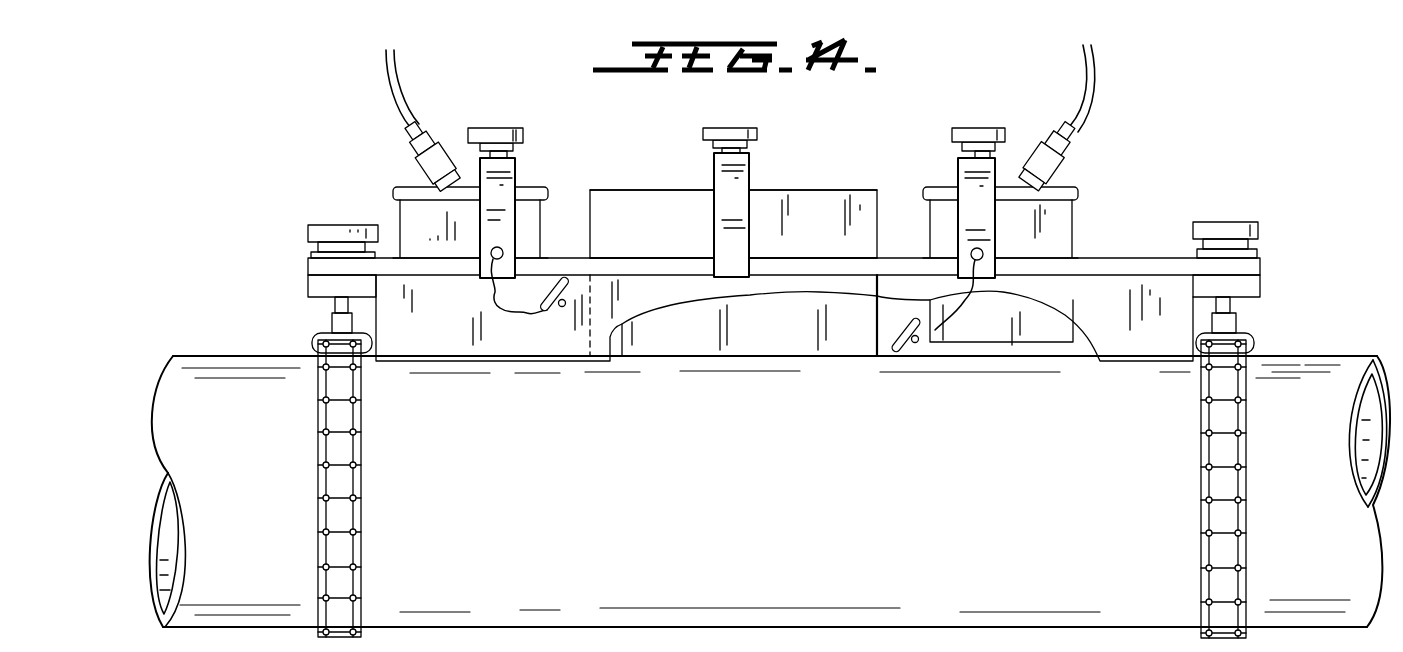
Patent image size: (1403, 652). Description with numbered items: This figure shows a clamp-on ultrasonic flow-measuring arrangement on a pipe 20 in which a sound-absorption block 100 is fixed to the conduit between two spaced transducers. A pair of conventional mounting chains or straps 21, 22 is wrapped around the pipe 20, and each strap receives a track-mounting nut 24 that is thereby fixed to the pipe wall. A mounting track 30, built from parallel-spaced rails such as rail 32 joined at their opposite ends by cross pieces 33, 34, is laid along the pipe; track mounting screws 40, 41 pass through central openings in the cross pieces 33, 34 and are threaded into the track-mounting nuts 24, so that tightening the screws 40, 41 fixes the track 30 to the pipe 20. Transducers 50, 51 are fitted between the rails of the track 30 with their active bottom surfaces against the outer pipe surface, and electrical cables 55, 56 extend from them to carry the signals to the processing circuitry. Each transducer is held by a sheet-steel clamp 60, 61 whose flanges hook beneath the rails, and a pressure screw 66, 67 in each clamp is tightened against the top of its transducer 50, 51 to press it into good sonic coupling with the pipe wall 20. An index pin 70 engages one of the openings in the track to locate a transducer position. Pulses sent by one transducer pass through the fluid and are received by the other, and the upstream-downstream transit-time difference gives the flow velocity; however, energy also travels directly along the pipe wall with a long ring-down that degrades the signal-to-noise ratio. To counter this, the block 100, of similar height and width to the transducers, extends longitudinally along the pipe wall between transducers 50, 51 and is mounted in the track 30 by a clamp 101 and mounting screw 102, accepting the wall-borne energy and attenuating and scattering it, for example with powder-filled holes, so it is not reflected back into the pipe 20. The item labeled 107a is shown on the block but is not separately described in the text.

The pipe 20 is at (772, 508).
The mounting chain or strap 21 is at (361, 513).
The mounting chain or strap 22 is at (1201, 512).
The track-mounting nut 24 is at (332, 322).
The mounting track 30 is at (890, 250).
The rail 32 is at (510, 347).
The cross piece 33 is at (308, 256).
The cross piece 34 is at (1264, 258).
The track mounting screw 40 is at (345, 224).
The track mounting screw 41 is at (1250, 203).
The transducer 50 is at (398, 208).
The transducer 51 is at (1080, 222).
The electrical cable 55 is at (387, 90).
The electrical cable 56 is at (1090, 104).
The clamp 60 is at (513, 173).
The clamp 61 is at (958, 175).
The pressure screw 66 is at (512, 112).
The pressure screw 67 is at (1003, 108).
The index pin 70 is at (503, 298).
The sound-absorption block 100 is at (805, 202).
The clamp 101 is at (715, 229).
The mounting screw 102 is at (757, 112).
The housing cover 107a is at (672, 170).